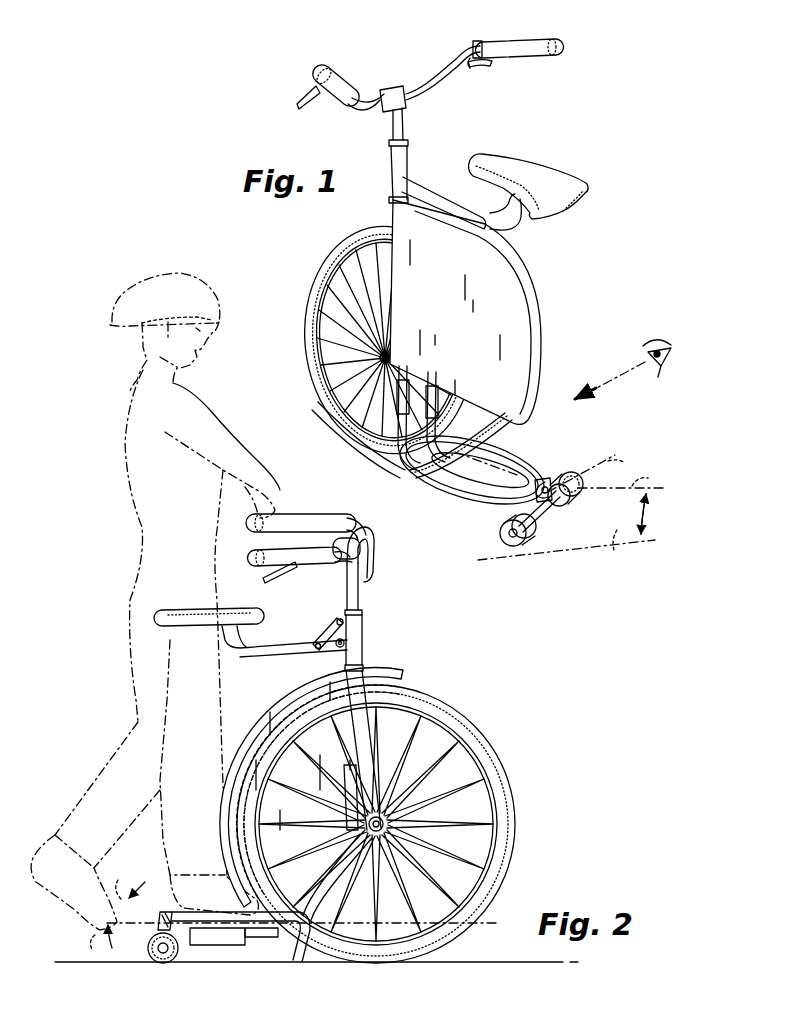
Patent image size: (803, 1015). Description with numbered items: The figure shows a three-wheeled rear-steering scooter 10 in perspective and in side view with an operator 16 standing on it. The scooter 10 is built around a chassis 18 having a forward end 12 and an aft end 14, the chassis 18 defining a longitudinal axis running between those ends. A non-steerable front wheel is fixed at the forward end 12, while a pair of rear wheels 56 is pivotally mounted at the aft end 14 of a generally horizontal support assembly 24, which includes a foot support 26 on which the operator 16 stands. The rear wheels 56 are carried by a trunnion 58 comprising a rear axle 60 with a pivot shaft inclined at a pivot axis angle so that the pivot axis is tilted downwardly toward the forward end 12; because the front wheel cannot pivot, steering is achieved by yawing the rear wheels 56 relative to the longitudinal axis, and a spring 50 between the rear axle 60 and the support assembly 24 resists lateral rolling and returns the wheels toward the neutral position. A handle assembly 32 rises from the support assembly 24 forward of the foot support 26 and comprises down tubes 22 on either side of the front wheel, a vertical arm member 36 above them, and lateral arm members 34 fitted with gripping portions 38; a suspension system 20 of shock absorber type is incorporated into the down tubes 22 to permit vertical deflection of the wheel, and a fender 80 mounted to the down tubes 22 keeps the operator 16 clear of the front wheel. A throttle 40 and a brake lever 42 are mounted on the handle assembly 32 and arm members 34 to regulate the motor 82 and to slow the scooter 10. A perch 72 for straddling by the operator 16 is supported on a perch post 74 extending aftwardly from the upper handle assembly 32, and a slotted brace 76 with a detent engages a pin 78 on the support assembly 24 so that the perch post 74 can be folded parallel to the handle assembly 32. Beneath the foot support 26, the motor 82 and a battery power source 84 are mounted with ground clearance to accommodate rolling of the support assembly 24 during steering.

In FIG. 1, the three-wheeled rear-steering scooter 10 is at (457, 306).
In FIG. 1, the forward end 12 is at (307, 389).
In FIG. 2, the forward end 12 is at (317, 839).
In FIG. 1, the aft end 14 is at (528, 516).
In FIG. 2, the aft end 14 is at (272, 935).
In FIG. 2, the operator 16 is at (125, 442).
In FIG. 1, the chassis 18 is at (376, 157).
In FIG. 2, the chassis 18 is at (399, 696).
In FIG. 1, the suspension system 20 is at (372, 438).
In FIG. 2, the down tubes 22 is at (405, 700).
In FIG. 1, the support assembly 24 is at (434, 495).
In FIG. 2, the support assembly 24 is at (301, 930).
In FIG. 1, the foot support 26 is at (482, 493).
In FIG. 1, the handle assembly 32 is at (393, 70).
In FIG. 2, the handle assembly 32 is at (375, 556).
In FIG. 1, the lateral arm members 34 is at (360, 97).
In FIG. 2, the lateral arm members 34 is at (311, 517).
In FIG. 1, the vertical arm member 36 is at (392, 122).
In FIG. 2, the vertical arm member 36 is at (362, 590).
In FIG. 1, the gripping portion 38 is at (337, 73).
In FIG. 2, the gripping portion 38 is at (262, 560).
In FIG. 1, the throttle 40 is at (490, 65).
In FIG. 2, the throttle 40 is at (360, 547).
In FIG. 1, the brake lever 42 is at (294, 102).
In FIG. 2, the brake lever 42 is at (290, 576).
In FIG. 1, the spring 50 is at (518, 462).
In FIG. 2, the spring 50 is at (181, 928).
In FIG. 1, the rear wheels 56 is at (577, 490).
In FIG. 2, the rear wheels 56 is at (159, 961).
In FIG. 1, the trunnion 58 is at (555, 507).
In FIG. 2, the trunnion 58 is at (168, 916).
In FIG. 1, the rear axle 60 is at (546, 502).
In FIG. 1, the perch 72 is at (540, 173).
In FIG. 2, the perch 72 is at (165, 612).
In FIG. 1, the perch post 74 is at (432, 186).
In FIG. 2, the perch post 74 is at (235, 650).
In FIG. 2, the slotted brace 76 is at (324, 636).
In FIG. 2, the pivot 78 is at (353, 644).
In FIG. 1, the fender 80 is at (518, 268).
In FIG. 2, the fender 80 is at (283, 701).
In FIG. 2, the motor 82 is at (213, 946).
In FIG. 2, the power source 84 is at (262, 938).